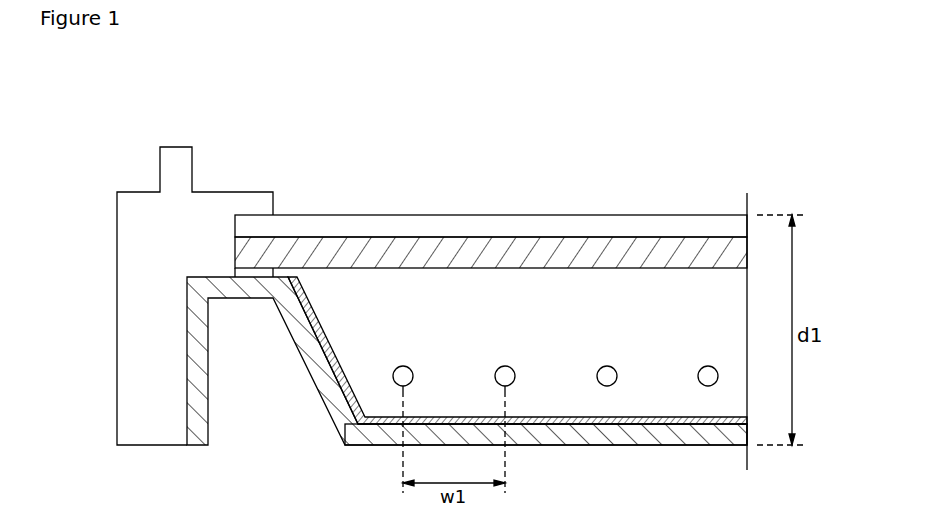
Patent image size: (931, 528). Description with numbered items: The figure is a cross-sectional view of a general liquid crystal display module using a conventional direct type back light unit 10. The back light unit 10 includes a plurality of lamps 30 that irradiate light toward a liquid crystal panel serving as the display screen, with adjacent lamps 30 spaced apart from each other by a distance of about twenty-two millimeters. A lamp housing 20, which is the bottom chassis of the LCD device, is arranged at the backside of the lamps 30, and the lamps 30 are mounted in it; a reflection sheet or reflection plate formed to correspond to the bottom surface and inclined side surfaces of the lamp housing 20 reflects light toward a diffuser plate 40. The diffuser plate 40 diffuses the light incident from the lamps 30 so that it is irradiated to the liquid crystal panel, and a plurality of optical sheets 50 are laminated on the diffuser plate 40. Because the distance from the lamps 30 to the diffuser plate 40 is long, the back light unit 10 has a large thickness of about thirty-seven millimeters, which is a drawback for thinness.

The back light unit 10 is at (697, 111).
The lamp housing 20 is at (677, 438).
The lamps 30 is at (607, 386).
The diffuser plate 40 is at (380, 252).
The optical sheets 50 is at (484, 225).